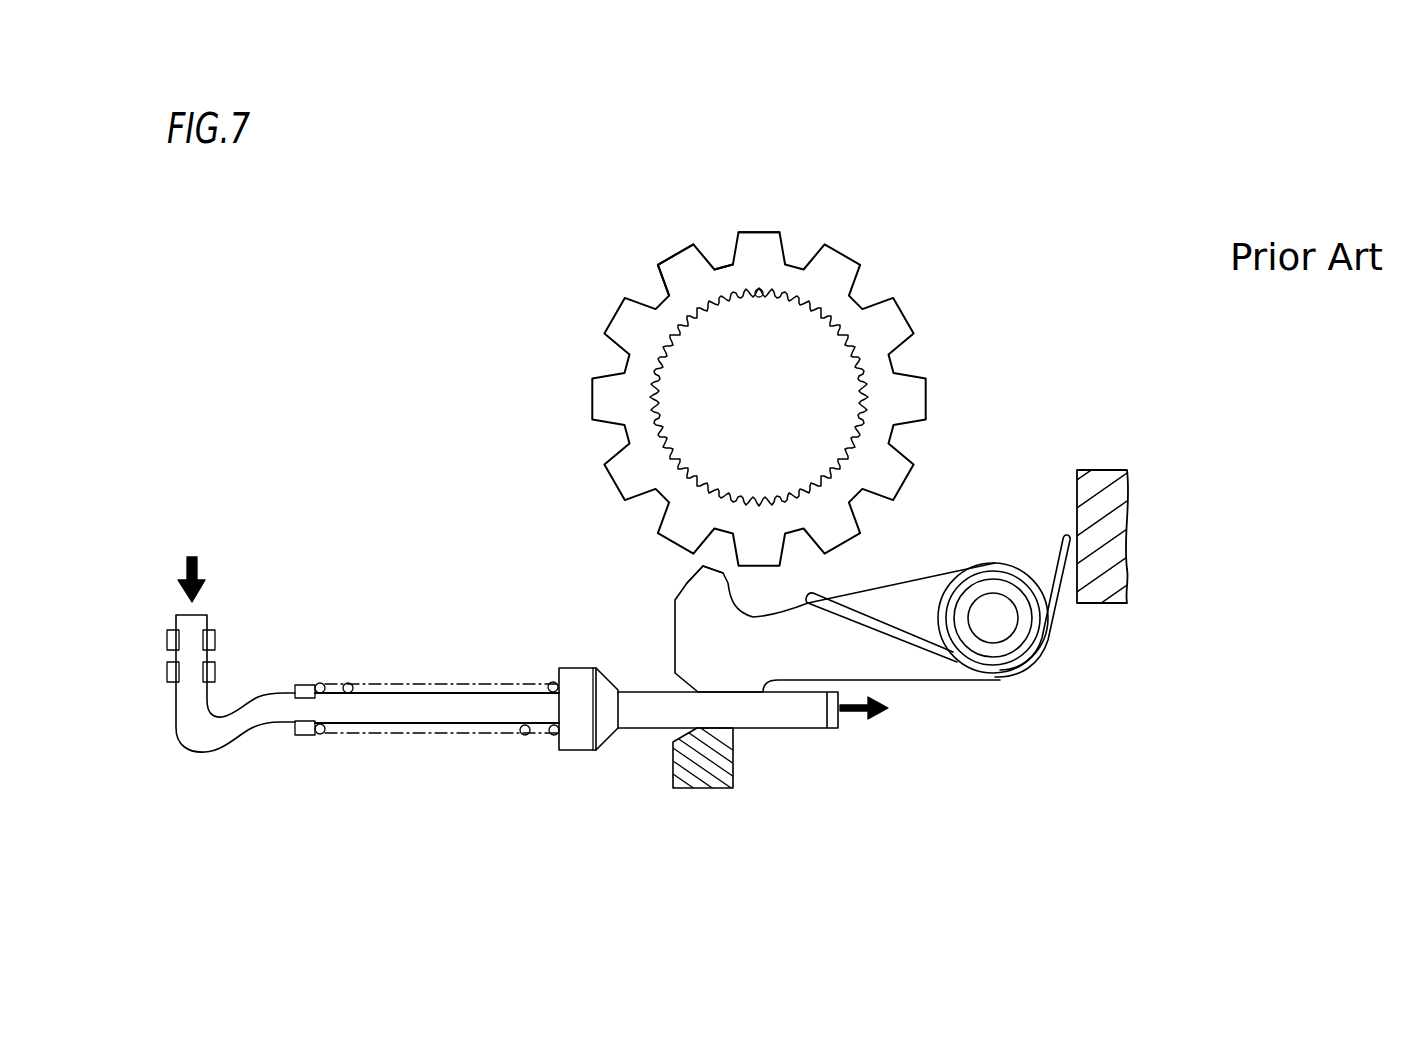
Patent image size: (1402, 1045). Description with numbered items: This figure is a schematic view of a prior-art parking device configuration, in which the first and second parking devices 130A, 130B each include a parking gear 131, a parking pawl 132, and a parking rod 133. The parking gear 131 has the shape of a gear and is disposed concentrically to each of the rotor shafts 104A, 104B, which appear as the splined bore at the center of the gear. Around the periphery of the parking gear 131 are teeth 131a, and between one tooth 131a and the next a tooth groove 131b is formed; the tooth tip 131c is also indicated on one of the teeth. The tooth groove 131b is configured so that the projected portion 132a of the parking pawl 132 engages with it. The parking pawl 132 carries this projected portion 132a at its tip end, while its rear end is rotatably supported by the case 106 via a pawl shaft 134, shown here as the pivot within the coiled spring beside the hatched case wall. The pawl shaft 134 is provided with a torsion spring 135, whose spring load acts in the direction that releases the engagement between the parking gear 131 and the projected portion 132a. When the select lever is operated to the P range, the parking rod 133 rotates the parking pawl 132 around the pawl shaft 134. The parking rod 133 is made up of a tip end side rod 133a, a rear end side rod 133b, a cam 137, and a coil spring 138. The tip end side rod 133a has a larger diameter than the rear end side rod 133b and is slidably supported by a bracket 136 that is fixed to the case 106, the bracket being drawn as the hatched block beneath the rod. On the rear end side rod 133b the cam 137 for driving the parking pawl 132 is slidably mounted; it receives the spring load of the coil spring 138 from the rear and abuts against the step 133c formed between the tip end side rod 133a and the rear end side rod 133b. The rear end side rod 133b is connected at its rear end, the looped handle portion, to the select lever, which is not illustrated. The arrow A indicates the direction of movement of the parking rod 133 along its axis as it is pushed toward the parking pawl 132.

The parking gear 131 is at (868, 214).
The tooth 131a is at (684, 266).
The tooth groove 131b is at (723, 253).
The tooth tip 131c is at (765, 228).
The rotor shaft 104A is at (859, 397).
The rotor shaft 104B is at (830, 382).
The first parking device 130A is at (643, 580).
The second parking device 130B is at (340, 367).
The parking pawl 132 is at (923, 690).
The projected portion 132a is at (687, 581).
The parking rod 133 is at (307, 650).
The tip end side rod 133a is at (783, 718).
The rear end side rod 133b is at (242, 733).
The step 133c is at (605, 717).
The pawl shaft 134 is at (995, 633).
The torsion spring 135 is at (1060, 593).
The bracket 136 is at (698, 788).
The cam 137 is at (578, 750).
The coil spring 138 is at (349, 683).
The case 106 is at (1087, 478).
The movement direction A is at (848, 717).